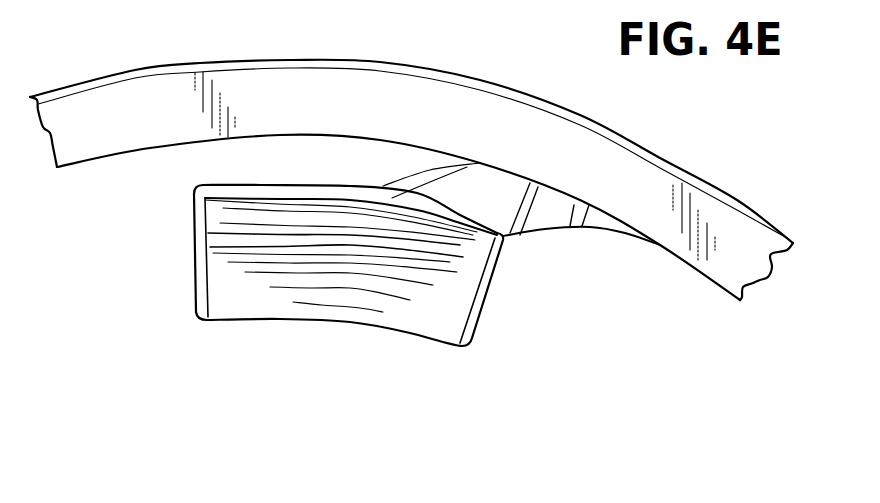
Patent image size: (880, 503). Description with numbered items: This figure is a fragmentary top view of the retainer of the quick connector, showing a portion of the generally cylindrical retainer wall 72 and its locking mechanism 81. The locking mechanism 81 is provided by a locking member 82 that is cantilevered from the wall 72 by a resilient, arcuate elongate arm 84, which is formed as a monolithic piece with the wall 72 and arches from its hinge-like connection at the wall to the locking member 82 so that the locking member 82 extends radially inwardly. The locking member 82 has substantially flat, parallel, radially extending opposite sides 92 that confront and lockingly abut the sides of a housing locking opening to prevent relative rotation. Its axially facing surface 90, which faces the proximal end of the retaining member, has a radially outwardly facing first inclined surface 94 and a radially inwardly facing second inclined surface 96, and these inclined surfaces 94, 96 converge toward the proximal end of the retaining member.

The cylindrical wall 72 is at (135, 70).
The locking mechanism 81 is at (329, 268).
The locking member 82 is at (200, 322).
The elongate arm 84 is at (573, 228).
The axially facing surface 90 is at (237, 240).
The opposite sides 92 is at (203, 268).
The first inclined surface 94 is at (396, 214).
The second inclined surface 96 is at (335, 305).